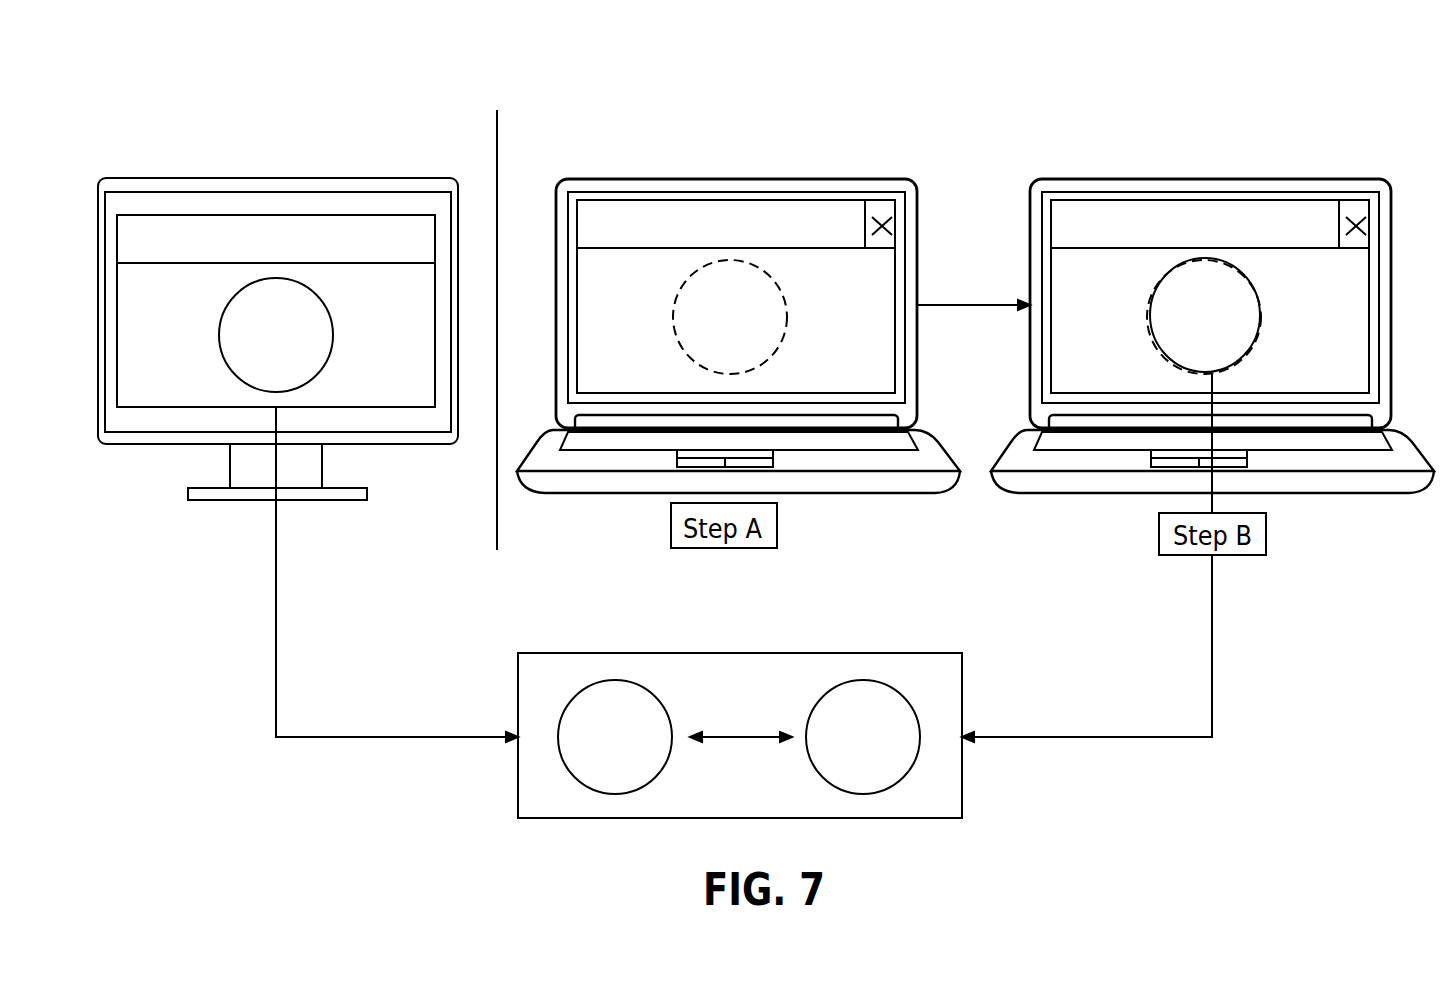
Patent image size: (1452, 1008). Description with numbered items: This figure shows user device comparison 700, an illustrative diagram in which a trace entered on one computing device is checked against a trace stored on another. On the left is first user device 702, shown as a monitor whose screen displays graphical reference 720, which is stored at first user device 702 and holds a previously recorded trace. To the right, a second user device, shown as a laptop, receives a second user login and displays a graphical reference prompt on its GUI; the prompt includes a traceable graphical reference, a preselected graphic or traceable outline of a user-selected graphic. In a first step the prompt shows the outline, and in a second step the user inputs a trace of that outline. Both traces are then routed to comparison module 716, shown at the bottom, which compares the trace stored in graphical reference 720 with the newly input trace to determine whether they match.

The user device comparison 700 is at (203, 50).
The first user device 702 is at (306, 178).
The comparison module 716 is at (742, 653).
The graphical reference 720 is at (180, 215).